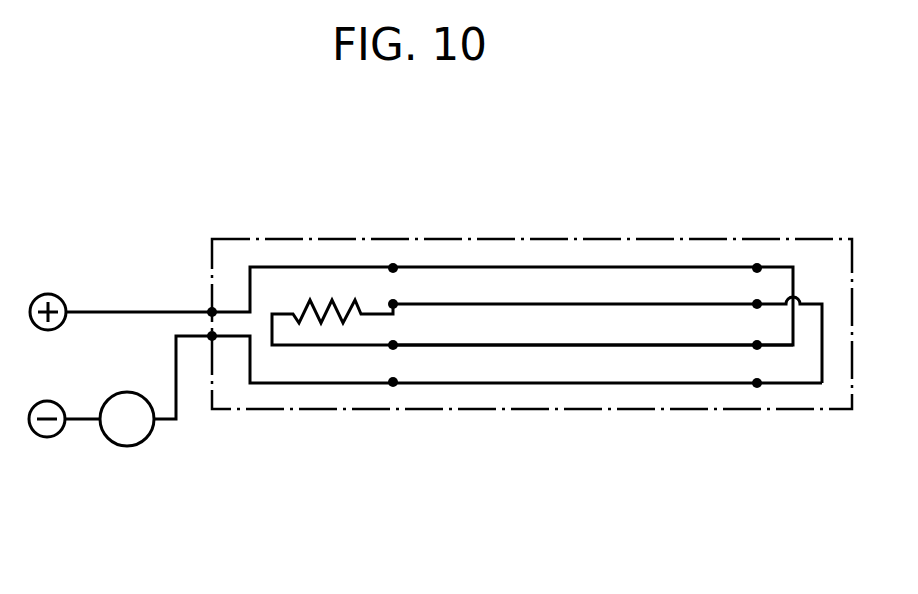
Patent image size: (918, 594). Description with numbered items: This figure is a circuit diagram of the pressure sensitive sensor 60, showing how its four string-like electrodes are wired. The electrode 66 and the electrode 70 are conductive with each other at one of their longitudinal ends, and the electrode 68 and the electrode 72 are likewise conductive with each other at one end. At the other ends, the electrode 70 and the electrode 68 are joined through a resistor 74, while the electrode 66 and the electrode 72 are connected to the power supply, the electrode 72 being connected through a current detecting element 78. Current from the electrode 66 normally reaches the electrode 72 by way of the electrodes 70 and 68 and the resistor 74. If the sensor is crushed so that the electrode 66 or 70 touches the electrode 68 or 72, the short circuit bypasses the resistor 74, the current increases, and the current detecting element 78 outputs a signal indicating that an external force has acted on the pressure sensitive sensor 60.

The pressure sensitive sensor 60 is at (550, 240).
The electrode 66 is at (472, 266).
The electrode 68 is at (650, 302).
The electrode 70 is at (616, 348).
The electrode 72 is at (513, 385).
The resistor 74 is at (332, 326).
The current detecting element 78 is at (125, 447).